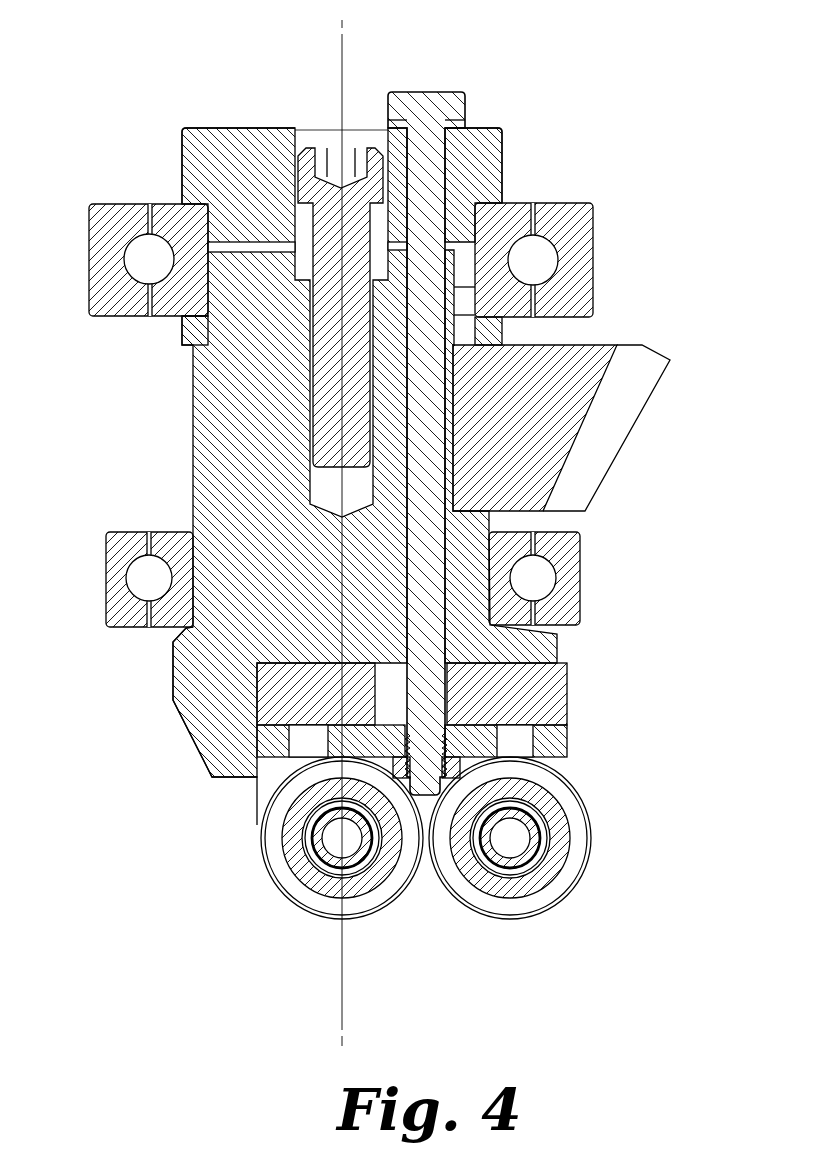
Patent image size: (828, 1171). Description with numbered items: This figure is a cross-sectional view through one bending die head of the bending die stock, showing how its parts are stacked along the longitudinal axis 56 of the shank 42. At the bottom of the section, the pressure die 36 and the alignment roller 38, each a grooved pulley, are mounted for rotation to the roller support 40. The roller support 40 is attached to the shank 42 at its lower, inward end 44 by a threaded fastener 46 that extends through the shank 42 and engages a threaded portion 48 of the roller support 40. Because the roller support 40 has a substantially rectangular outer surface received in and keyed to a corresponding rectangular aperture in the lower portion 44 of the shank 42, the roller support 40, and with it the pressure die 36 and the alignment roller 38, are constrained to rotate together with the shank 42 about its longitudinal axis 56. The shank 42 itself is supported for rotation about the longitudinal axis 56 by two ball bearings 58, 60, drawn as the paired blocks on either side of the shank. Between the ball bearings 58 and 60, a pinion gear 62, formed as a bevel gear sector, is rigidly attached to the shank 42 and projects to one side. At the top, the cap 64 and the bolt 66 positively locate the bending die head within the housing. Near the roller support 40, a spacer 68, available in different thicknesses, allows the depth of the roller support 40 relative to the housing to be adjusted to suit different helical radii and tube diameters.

The pressure die 36 is at (522, 905).
The alignment roller 38 is at (300, 903).
The roller support 40 is at (558, 746).
The shank 42 is at (193, 422).
The lower (inward) end 44 is at (192, 727).
The threaded fastener 46 is at (428, 107).
The threaded portion 48 is at (440, 752).
The longitudinal axis 56 is at (341, 49).
The ball bearing 58 is at (104, 257).
The ball bearing 60 is at (120, 540).
The pinion gear 62 is at (620, 415).
The cap 64 is at (216, 128).
The bolt 66 is at (323, 197).
The spacer 68 is at (548, 711).